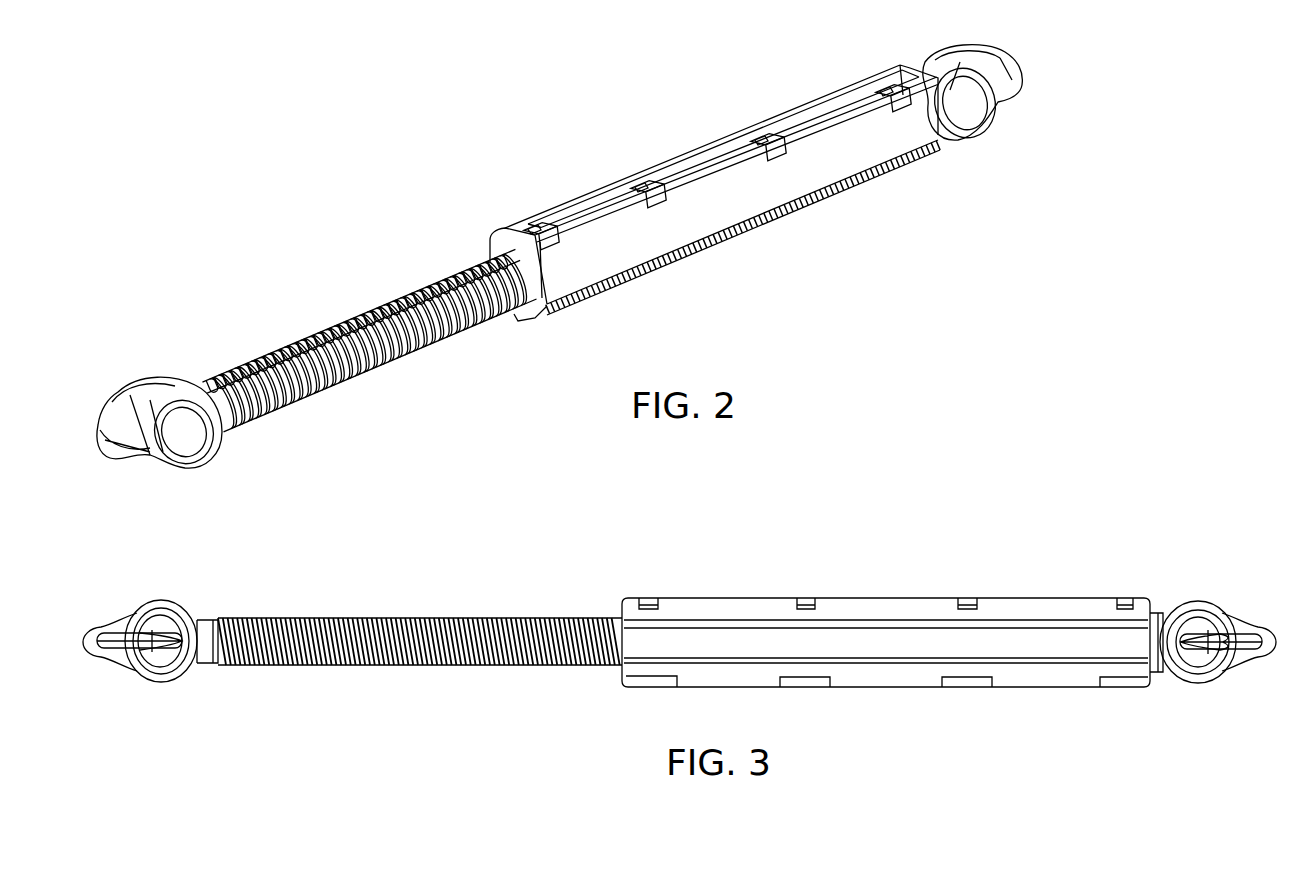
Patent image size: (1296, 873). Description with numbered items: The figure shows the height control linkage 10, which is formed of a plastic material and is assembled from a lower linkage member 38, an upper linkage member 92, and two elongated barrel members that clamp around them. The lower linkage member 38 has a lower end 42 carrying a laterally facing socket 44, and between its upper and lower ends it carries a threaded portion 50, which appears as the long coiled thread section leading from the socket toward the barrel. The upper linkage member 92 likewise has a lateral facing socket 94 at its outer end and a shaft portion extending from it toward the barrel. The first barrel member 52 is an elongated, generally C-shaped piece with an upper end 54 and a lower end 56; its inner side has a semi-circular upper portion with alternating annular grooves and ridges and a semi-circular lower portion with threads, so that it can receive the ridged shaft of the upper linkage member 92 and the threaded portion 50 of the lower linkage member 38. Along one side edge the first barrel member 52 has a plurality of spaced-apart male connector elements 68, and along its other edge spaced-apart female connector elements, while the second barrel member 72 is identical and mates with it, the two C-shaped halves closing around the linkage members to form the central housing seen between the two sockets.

In FIG. 2, the linkage 10 is at (565, 170).
In FIG. 3, the linkage 10 is at (715, 572).
In FIG. 2, the lower linkage member 38 is at (355, 291).
In FIG. 3, the lower linkage member 38 is at (413, 598).
In FIG. 2, the lower end 42 is at (100, 463).
In FIG. 2, the laterally facing socket 44 is at (158, 392).
In FIG. 3, the laterally facing socket 44 is at (174, 614).
In FIG. 2, the threaded portion 50 is at (387, 345).
In FIG. 3, the threaded portion 50 is at (518, 618).
In FIG. 2, the first barrel member 52 is at (482, 228).
In FIG. 3, the first barrel member 52 is at (836, 597).
In FIG. 2, the upper end 54 is at (902, 62).
In FIG. 3, the upper end 54 is at (1166, 595).
In FIG. 2, the lower end 56 is at (485, 257).
In FIG. 3, the lower end 56 is at (606, 598).
In FIG. 3, the male connector elements 68 is at (968, 598).
In FIG. 2, the second barrel member 72 is at (676, 248).
In FIG. 3, the second barrel member 72 is at (891, 698).
In FIG. 2, the upper linkage member 92 is at (1055, 58).
In FIG. 3, the upper linkage member 92 is at (1254, 612).
In FIG. 2, the lateral facing socket 94 is at (990, 135).
In FIG. 3, the lateral facing socket 94 is at (1195, 605).